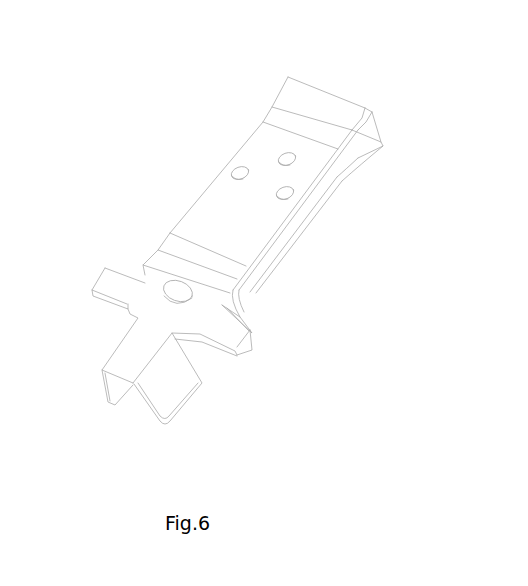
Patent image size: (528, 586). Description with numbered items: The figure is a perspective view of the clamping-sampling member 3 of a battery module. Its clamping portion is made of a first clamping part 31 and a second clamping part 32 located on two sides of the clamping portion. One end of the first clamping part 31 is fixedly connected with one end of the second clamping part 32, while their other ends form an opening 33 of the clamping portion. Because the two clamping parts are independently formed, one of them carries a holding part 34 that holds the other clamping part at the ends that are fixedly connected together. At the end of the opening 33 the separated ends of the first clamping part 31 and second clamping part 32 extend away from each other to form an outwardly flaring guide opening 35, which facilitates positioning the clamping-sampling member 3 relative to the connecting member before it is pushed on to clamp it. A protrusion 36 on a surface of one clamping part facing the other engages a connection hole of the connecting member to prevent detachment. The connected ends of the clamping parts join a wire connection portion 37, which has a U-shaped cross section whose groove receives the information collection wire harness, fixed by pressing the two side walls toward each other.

The clamping-sampling member 3 is at (165, 117).
The first clamping part 31 is at (258, 213).
The second clamping part 32 is at (255, 266).
The opening 33 is at (422, 120).
The holding part 34 is at (238, 310).
The guide opening 35 is at (365, 140).
The protrusion 36 is at (292, 163).
The wire connection portion 37 is at (182, 381).